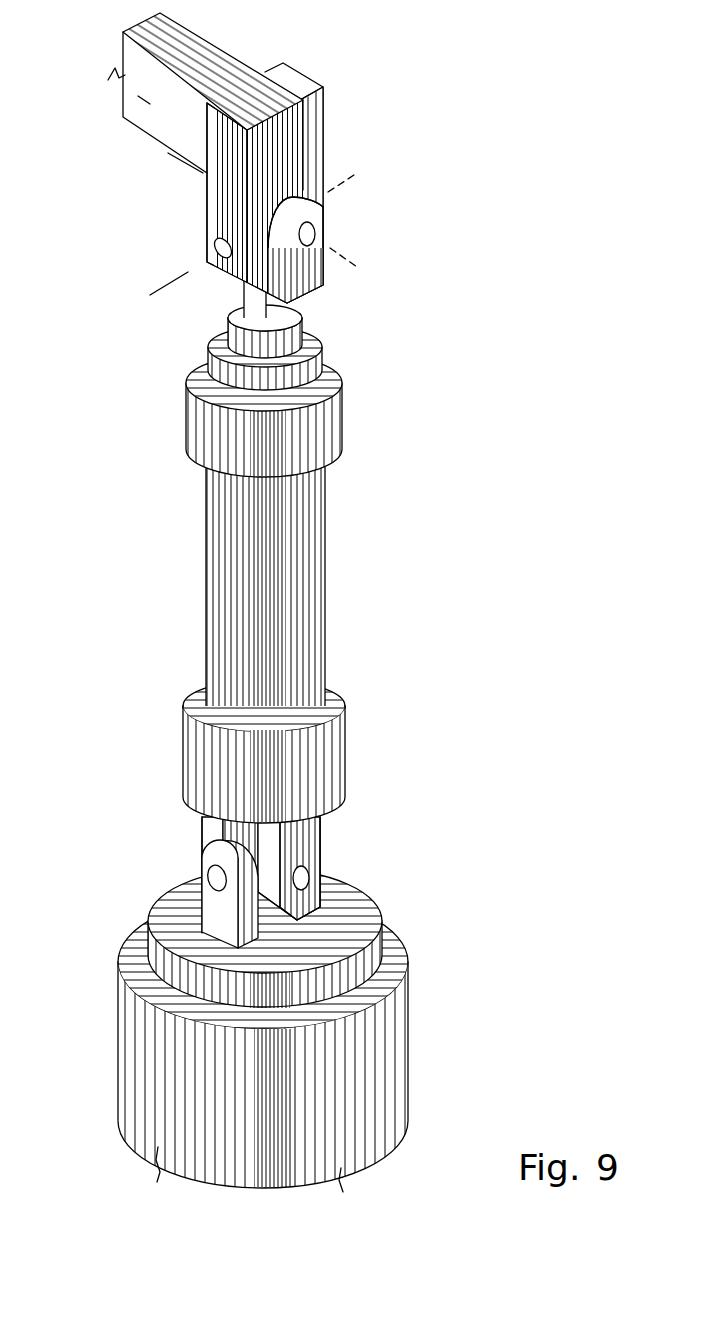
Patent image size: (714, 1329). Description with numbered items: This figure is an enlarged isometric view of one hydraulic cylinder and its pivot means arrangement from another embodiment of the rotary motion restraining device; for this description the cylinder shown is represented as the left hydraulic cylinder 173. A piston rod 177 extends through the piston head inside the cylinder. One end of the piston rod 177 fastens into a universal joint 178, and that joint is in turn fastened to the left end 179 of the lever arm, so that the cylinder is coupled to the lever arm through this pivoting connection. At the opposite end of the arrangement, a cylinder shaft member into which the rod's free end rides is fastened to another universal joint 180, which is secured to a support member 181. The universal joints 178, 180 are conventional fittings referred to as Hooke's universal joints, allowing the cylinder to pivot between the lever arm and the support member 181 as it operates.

The left hydraulic cylinder 173 is at (205, 568).
The piston rod 177 is at (245, 290).
The universal joint 178 is at (206, 198).
The left end of lever arm 179 is at (197, 27).
The universal joint 180 is at (320, 843).
The support member 181 is at (117, 1048).